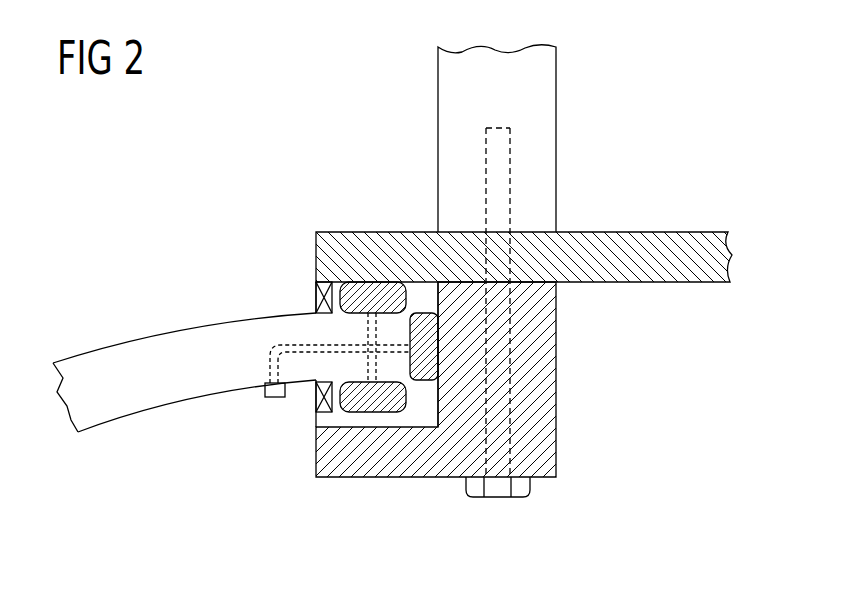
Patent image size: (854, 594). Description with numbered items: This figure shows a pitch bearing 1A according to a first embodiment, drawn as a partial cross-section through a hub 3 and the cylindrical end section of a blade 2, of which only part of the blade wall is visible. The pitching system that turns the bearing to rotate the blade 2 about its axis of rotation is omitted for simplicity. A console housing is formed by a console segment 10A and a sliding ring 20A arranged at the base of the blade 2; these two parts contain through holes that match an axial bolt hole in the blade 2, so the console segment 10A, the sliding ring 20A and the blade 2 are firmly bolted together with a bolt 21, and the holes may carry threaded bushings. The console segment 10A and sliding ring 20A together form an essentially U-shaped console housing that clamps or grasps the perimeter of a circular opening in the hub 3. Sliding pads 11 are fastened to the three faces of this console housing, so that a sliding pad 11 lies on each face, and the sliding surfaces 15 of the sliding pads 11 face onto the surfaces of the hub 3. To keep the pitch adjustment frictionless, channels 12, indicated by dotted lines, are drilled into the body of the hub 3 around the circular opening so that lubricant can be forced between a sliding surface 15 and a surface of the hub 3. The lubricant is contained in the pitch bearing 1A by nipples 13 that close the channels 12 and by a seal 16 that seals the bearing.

The pitch bearing 1A is at (660, 105).
The blade 2 is at (458, 82).
The sliding ring 20A is at (367, 240).
The console segment 10A is at (556, 424).
The seal 16 is at (316, 300).
The sliding surface 15 is at (354, 314).
The sliding pad 11 is at (363, 400).
The hub 3 is at (153, 352).
The channel 12 is at (270, 360).
The nipple 13 is at (273, 398).
The bolt 21 is at (493, 488).